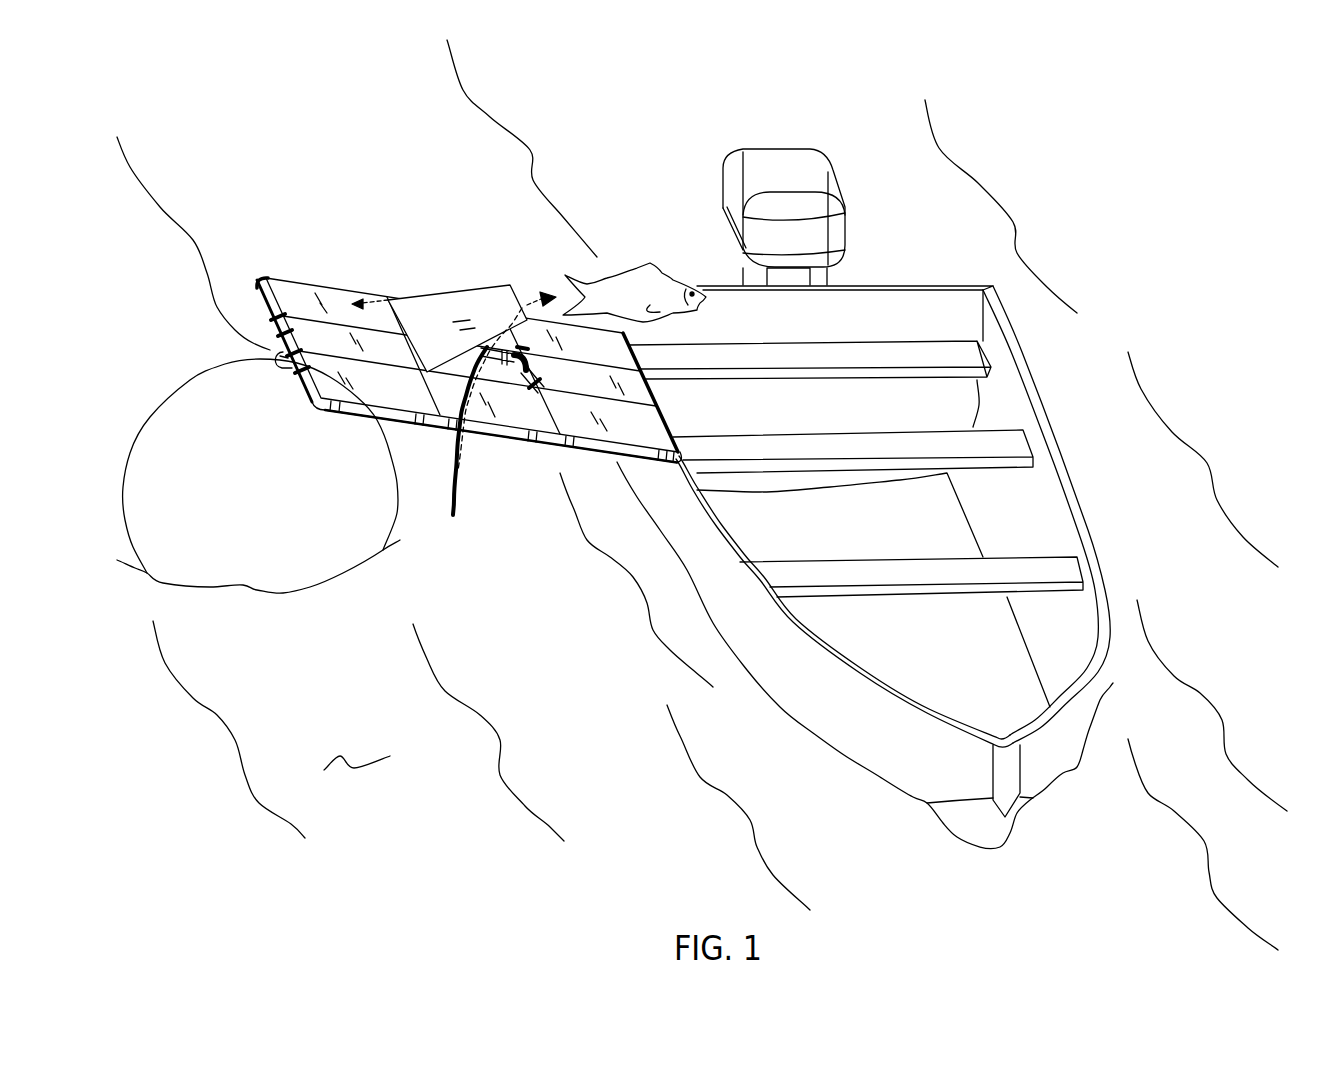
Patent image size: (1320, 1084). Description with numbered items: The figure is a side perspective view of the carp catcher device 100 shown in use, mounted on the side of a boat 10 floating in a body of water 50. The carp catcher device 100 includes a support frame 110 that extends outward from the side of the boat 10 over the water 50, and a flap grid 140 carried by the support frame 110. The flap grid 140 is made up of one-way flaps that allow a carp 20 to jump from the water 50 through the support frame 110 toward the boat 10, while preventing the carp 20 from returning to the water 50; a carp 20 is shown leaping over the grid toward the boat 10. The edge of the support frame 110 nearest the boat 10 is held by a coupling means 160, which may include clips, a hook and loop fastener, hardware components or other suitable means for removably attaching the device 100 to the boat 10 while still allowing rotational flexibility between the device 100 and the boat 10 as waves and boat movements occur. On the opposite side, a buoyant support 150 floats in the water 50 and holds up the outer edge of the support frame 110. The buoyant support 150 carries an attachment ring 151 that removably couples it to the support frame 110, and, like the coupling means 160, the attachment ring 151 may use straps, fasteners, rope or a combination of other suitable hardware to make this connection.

The boat 10 is at (1009, 403).
The carp 20 is at (654, 290).
The body of water 50 is at (354, 768).
The carp catcher device 100 is at (374, 229).
The support frame 110 is at (490, 450).
The flap grid 140 is at (390, 301).
The buoyant support 150 is at (217, 422).
The attachment ring 151 is at (272, 351).
The coupling means 160 is at (663, 413).